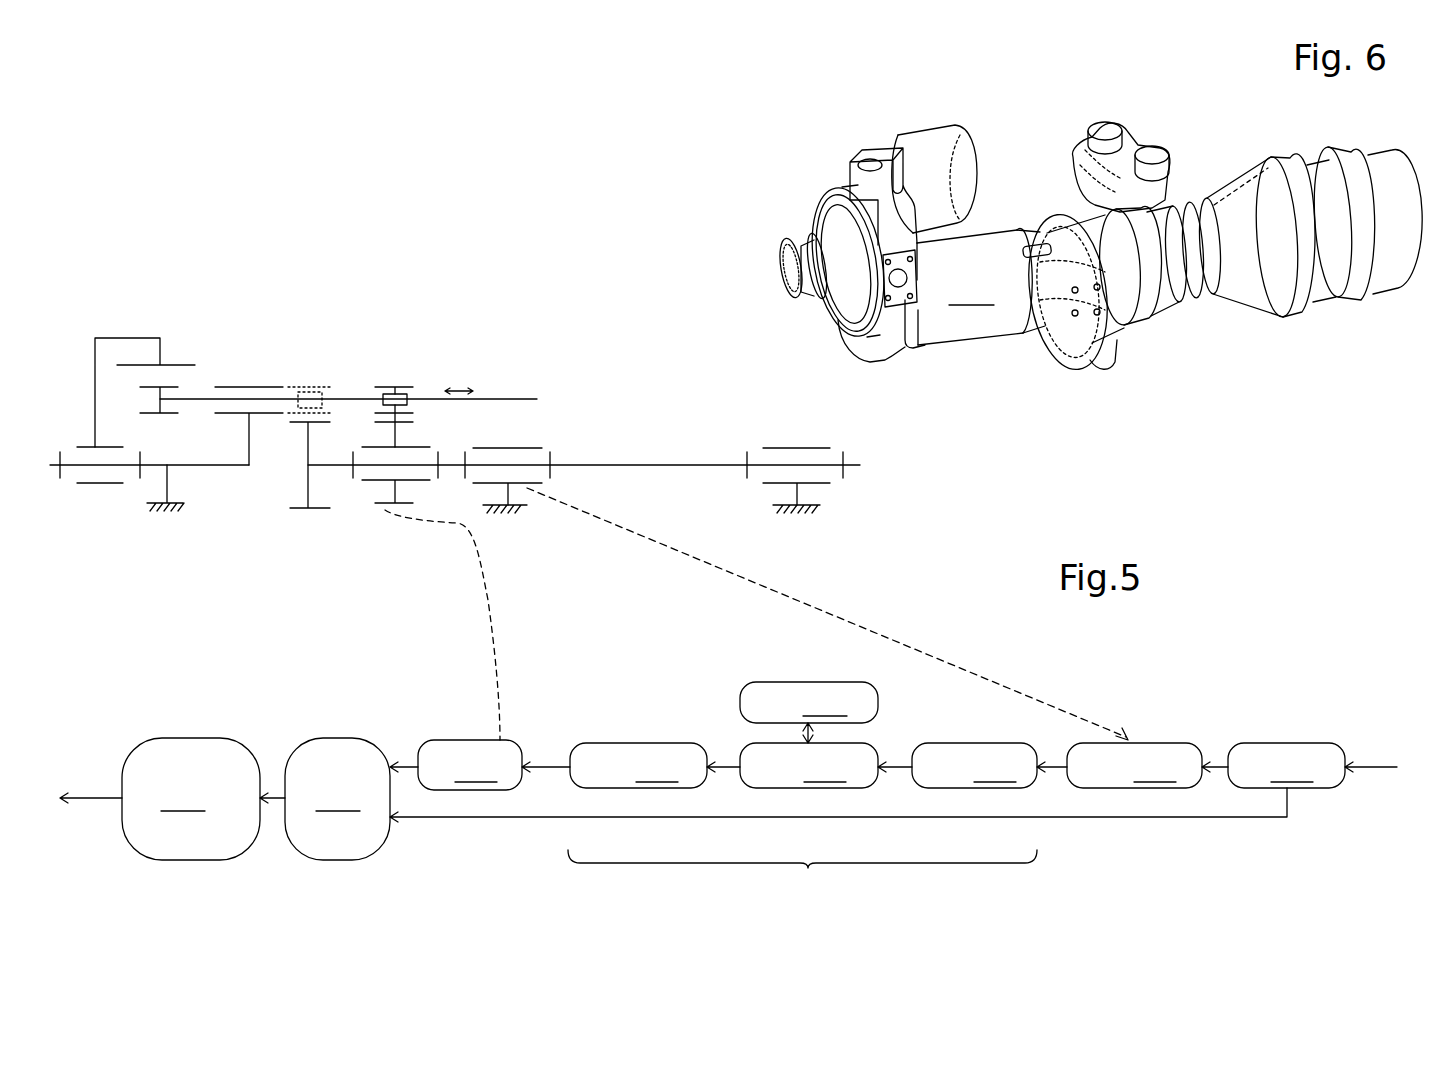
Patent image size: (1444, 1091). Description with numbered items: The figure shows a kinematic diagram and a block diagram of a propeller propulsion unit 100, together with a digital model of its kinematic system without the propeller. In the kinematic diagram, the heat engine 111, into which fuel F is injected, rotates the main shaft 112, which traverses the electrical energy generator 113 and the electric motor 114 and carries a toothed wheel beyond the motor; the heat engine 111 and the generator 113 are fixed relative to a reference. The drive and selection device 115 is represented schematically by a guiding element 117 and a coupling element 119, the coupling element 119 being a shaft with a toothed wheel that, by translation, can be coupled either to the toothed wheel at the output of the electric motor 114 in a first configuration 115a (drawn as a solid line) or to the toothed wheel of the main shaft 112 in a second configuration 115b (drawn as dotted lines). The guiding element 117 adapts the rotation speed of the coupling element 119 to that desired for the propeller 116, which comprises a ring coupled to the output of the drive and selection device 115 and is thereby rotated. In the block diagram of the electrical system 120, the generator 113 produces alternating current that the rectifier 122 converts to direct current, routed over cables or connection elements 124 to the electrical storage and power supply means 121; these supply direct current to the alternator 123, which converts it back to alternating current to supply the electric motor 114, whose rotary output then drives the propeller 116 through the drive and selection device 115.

In FIG. 5, the propeller propulsion unit 100 is at (1020, 895).
In FIG. 5, the heat engine 111 is at (789, 440).
In FIG. 6, the heat engine 111 is at (1192, 150).
In FIG. 5, the main shaft 112 is at (650, 465).
In FIG. 5, the electrical energy generator 113 is at (523, 441).
In FIG. 6, the electrical energy generator 113 is at (978, 288).
In FIG. 5, the electric motor 114 is at (377, 514).
In FIG. 6, the electric motor 114 is at (932, 137).
In FIG. 5, the drive and selection device 115 is at (325, 799).
In FIG. 6, the drive and selection device 115 is at (853, 112).
In FIG. 5, the first configuration 115a is at (417, 404).
In FIG. 5, the second configuration 115b is at (328, 405).
In FIG. 5, the propeller 116 is at (122, 330).
In FIG. 5, the guiding element 117 is at (235, 364).
In FIG. 5, the coupling element 119 is at (500, 399).
In FIG. 5, the electrical system 120 is at (802, 875).
In FIG. 5, the electrical storage and power supply means 121 is at (809, 712).
In FIG. 5, the rectifier 122 is at (972, 765).
In FIG. 5, the alternator 123 is at (614, 765).
In FIG. 5, the cables or connection elements 124 is at (792, 765).